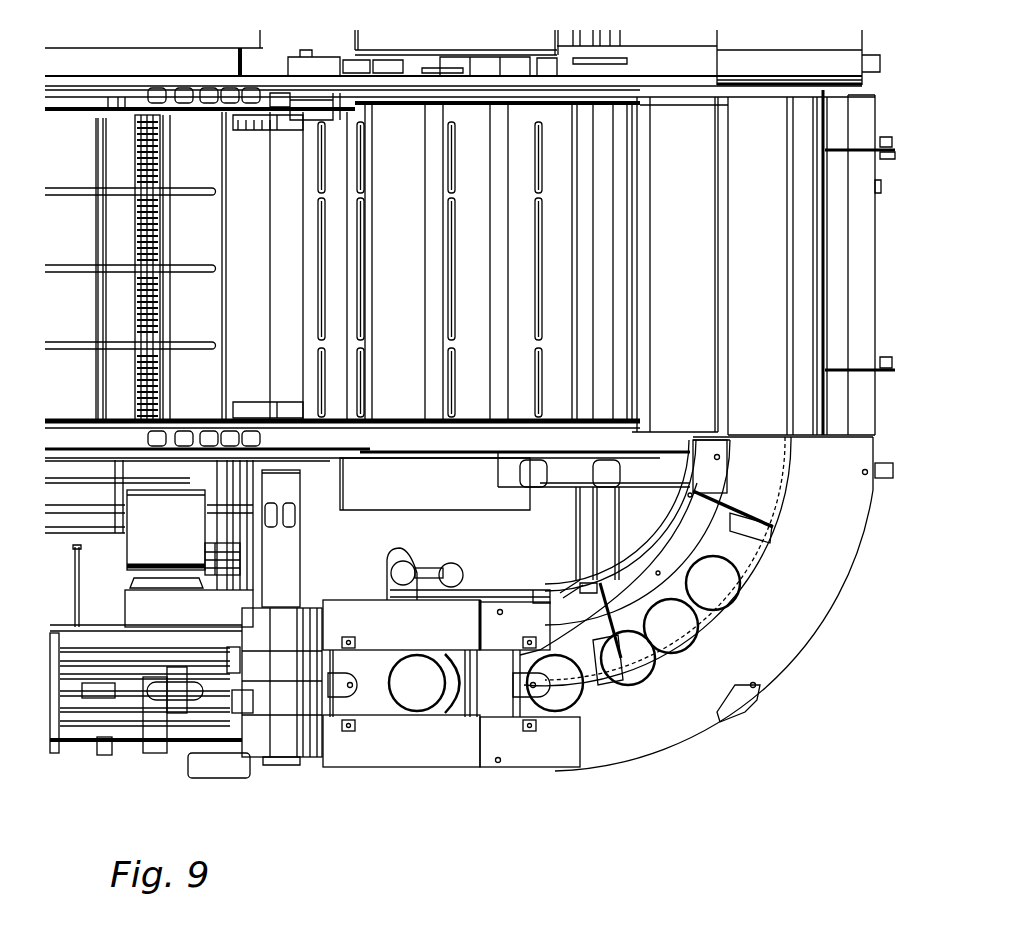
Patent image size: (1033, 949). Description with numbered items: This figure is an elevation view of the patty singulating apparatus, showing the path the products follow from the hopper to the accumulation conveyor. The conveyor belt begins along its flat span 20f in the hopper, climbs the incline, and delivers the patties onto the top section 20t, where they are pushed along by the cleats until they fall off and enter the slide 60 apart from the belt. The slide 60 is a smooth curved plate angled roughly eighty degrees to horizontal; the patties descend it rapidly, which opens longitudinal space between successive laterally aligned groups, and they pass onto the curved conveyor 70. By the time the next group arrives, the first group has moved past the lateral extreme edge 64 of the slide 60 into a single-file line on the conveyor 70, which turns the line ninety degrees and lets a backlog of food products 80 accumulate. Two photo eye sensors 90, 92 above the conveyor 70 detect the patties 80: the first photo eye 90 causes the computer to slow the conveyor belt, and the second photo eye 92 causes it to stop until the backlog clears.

The flat span 20f is at (92, 254).
The top section 20t is at (418, 266).
The slide 60 is at (688, 266).
The curved conveyor 70 is at (773, 266).
The lateral extreme edge 64 is at (733, 437).
The second photo eye sensor 92 is at (770, 528).
The food products 80 is at (637, 668).
The first photo eye sensor 90 is at (608, 690).